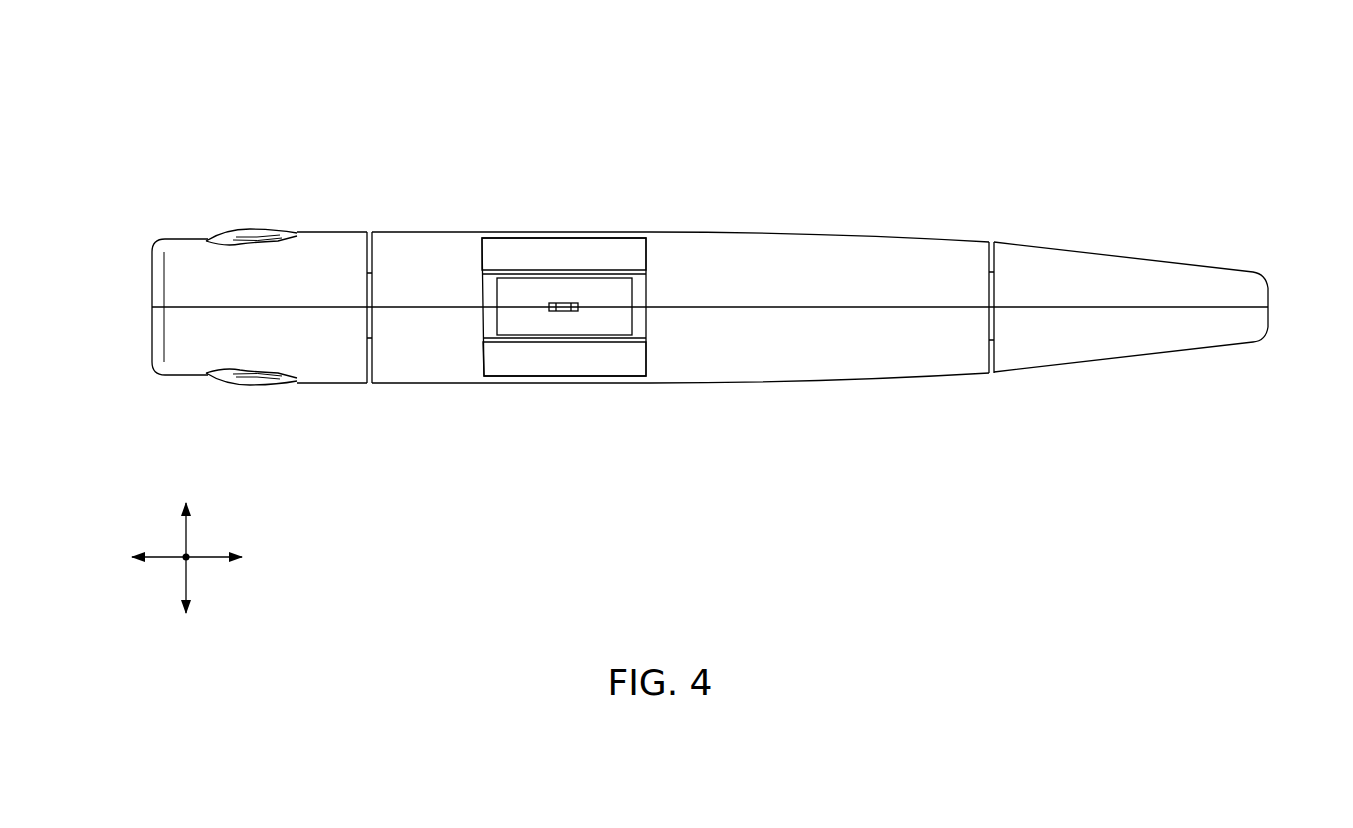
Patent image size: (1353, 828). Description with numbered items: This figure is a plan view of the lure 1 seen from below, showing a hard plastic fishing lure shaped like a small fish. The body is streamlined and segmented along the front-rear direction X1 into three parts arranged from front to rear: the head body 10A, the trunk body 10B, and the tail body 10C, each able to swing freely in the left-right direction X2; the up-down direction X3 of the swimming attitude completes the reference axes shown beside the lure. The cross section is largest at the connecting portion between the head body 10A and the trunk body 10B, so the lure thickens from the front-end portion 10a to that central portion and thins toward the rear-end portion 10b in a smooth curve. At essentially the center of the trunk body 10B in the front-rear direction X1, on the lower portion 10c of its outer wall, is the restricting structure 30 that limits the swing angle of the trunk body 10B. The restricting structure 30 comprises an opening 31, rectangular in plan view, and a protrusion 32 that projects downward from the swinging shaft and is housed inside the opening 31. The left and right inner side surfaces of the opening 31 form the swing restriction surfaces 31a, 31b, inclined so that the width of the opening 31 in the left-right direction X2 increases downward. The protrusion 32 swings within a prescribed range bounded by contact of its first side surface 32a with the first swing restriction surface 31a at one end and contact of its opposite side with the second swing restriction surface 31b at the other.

The lure 1 is at (431, 172).
The head body 10A is at (312, 232).
The trunk body 10B is at (827, 231).
The tail body 10C is at (1125, 250).
The front-end portion 10a is at (150, 288).
The rear-end portion 10b is at (1270, 290).
The lower portion 10c is at (730, 268).
The restricting structure 30 is at (636, 390).
The opening 31 is at (563, 368).
The first swing restriction surface 31a is at (530, 383).
The second swing restriction surface 31b is at (530, 250).
The protrusion 32 is at (592, 326).
The first side surface 32a is at (598, 268).
The front-rear direction X1 is at (157, 557).
The left-right direction X2 is at (186, 533).
The up-down direction X3 is at (190, 560).